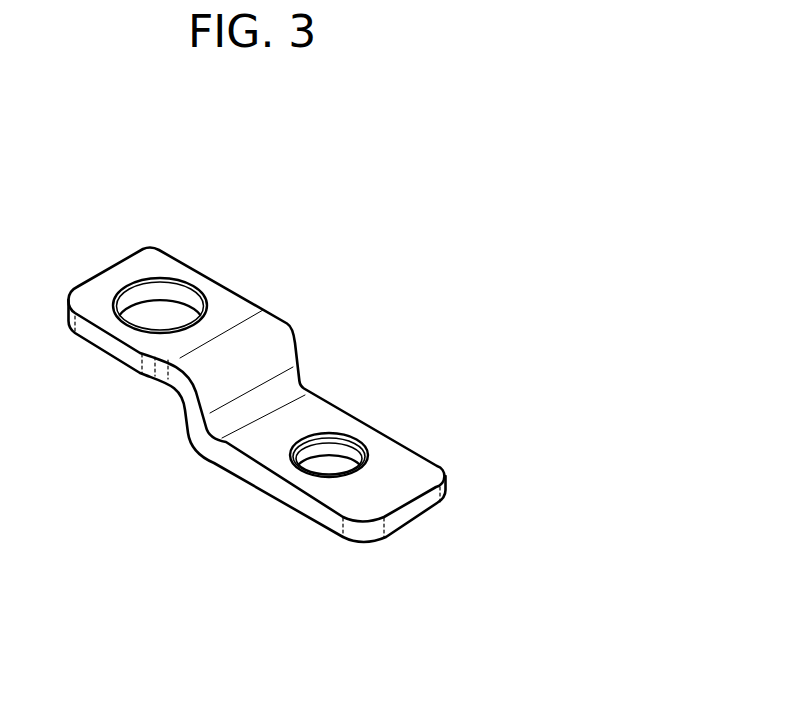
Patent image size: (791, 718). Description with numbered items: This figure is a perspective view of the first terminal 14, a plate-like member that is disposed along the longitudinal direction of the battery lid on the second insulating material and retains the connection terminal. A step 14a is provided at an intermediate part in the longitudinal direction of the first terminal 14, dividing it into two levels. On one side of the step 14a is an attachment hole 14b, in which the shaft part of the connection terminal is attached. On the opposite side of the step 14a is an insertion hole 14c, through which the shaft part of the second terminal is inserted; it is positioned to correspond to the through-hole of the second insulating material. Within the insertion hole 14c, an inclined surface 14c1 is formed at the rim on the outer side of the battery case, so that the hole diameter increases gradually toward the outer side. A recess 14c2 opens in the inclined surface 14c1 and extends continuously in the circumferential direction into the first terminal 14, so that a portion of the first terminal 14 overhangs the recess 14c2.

The first terminal 14 is at (398, 222).
The step 14a is at (288, 330).
The attachment hole 14b is at (155, 321).
The insertion hole 14c is at (352, 433).
The inclined surface 14c1 is at (327, 439).
The recess 14c2 is at (319, 446).